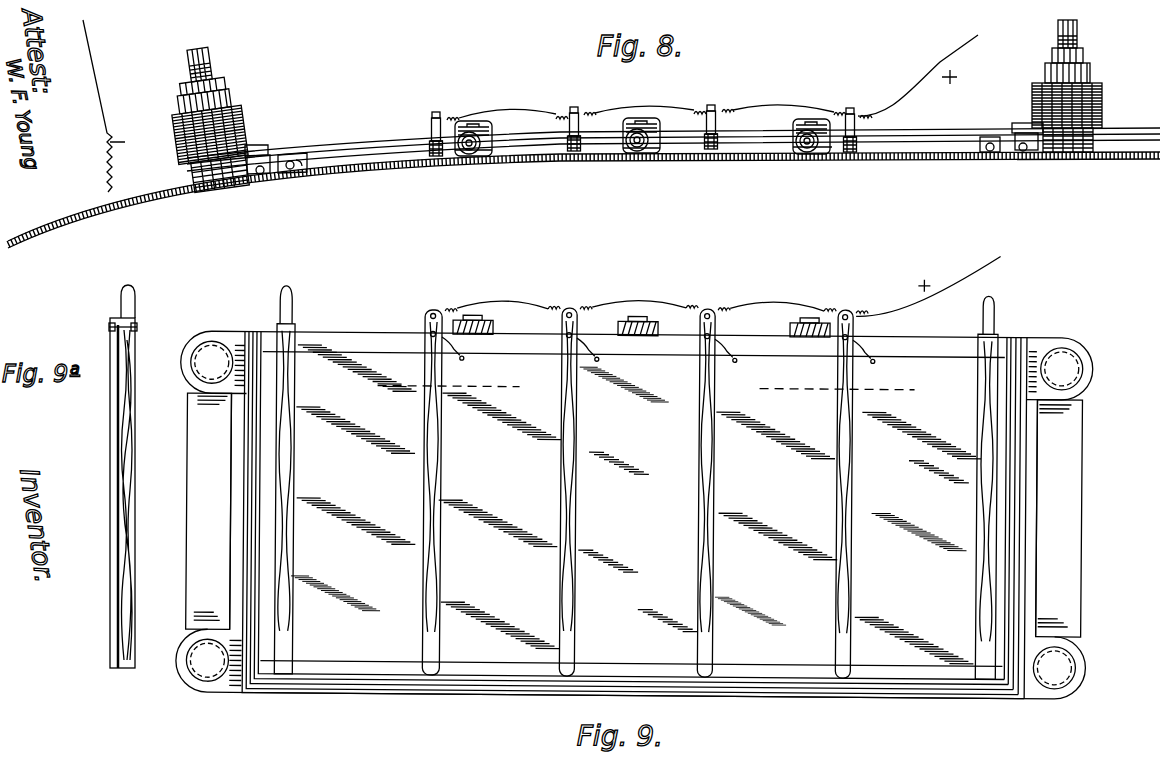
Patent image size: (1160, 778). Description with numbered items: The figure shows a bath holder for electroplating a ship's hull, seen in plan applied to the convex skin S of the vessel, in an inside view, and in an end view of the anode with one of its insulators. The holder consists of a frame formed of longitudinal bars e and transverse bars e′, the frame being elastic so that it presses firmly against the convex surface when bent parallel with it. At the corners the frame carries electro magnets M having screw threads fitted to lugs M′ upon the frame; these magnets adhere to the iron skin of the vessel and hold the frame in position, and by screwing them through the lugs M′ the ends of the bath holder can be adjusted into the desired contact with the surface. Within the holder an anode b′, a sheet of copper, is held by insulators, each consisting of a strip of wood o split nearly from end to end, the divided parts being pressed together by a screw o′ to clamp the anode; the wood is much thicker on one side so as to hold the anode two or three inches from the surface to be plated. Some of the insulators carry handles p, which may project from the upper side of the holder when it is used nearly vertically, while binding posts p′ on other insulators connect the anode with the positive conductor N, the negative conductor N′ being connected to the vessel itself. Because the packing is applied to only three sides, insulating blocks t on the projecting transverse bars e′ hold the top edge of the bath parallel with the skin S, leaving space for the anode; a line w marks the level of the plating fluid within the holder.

In FIG. 8, the skin S is at (599, 158).
In FIG. 8, the longitudinal bar e is at (333, 141).
In FIG. 8, the anode b′ is at (357, 164).
In FIG. 9, the anode b′ is at (611, 658).
In FIG. 8, the negative conductor N′ is at (91, 62).
In FIG. 8, the positive conductor N is at (968, 44).
In FIG. 9, the positive conductor N is at (723, 277).
In FIG. 8, the motor post P is at (231, 96).
In FIG. 9, the motor post P is at (634, 515).
In FIG. 8, the electro magnet M is at (194, 181).
In FIG. 9, the electro magnet M is at (213, 341).
In FIG. 8, the lug M′ is at (186, 163).
In FIG. 9, the lug M′ is at (1091, 355).
In FIG. 8, the handle p is at (284, 181).
In FIG. 9, the handle p is at (295, 300).
In FIG. 8, the binding post p′ is at (430, 129).
In FIG. 9, the binding post p′ is at (434, 306).
In FIG. 8, the strip of wood o is at (308, 175).
In FIG. 9, the strip of wood o is at (296, 478).
In FIG. 9A, the strip of wood o is at (138, 441).
In FIG. 8, the transverse bar e′ is at (470, 128).
In FIG. 8, the insulating block t is at (664, 153).
In FIG. 9, the insulating block t is at (495, 327).
In FIG. 9, the water line w is at (646, 386).
In FIG. 9A, the screw o′ is at (109, 327).